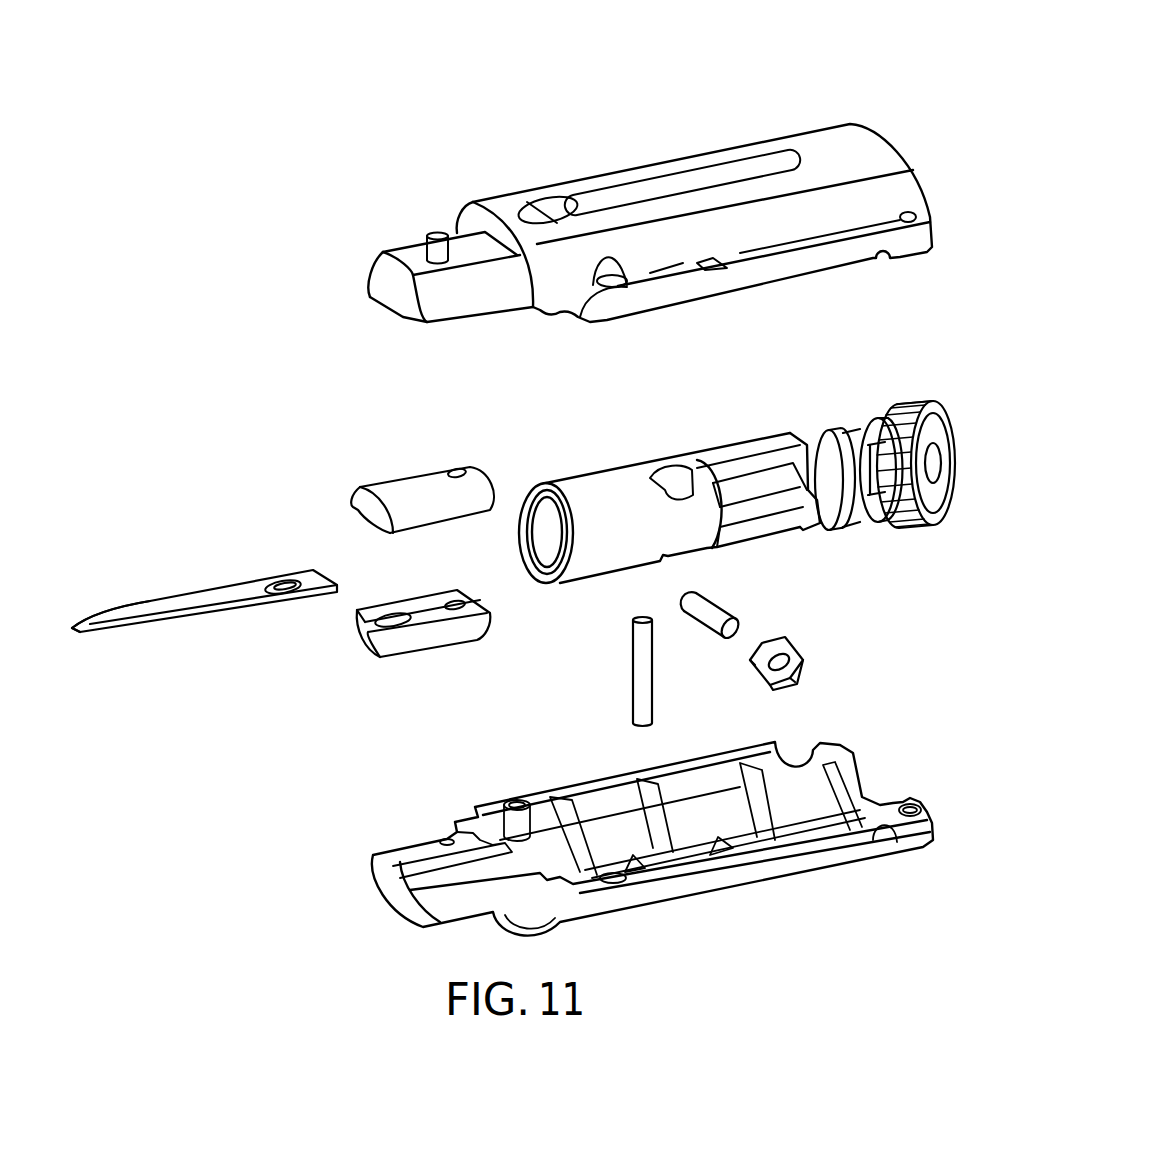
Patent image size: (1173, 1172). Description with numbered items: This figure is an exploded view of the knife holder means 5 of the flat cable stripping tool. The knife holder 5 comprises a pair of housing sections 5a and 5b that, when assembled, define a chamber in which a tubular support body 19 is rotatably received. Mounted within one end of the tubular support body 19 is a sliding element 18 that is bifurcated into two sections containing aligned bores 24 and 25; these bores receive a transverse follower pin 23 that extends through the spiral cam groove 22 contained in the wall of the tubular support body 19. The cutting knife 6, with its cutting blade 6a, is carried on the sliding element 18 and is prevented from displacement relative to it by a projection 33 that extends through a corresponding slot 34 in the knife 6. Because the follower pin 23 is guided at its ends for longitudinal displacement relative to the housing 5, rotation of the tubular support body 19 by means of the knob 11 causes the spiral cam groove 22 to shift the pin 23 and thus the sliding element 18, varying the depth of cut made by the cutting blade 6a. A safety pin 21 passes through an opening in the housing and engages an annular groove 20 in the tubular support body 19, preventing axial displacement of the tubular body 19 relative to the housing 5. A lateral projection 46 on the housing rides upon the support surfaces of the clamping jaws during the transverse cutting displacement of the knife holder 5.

The knife holder 5 is at (861, 121).
The housing section 5a is at (738, 153).
The housing section 5b is at (763, 887).
The lateral projection 46 is at (437, 238).
The cutting knife 6 is at (185, 605).
The cutting blade 6a is at (105, 635).
The slot 34 is at (285, 583).
The sliding element 18 is at (460, 507).
The bore 24 is at (455, 470).
The projection 33 is at (390, 622).
The bore 25 is at (453, 603).
The tubular support body 19 is at (590, 492).
The spiral cam groove 22 is at (670, 480).
The annular groove 20 is at (840, 493).
The knob 11 is at (937, 440).
The safety pin 21 is at (722, 612).
The follower pin 23 is at (633, 687).